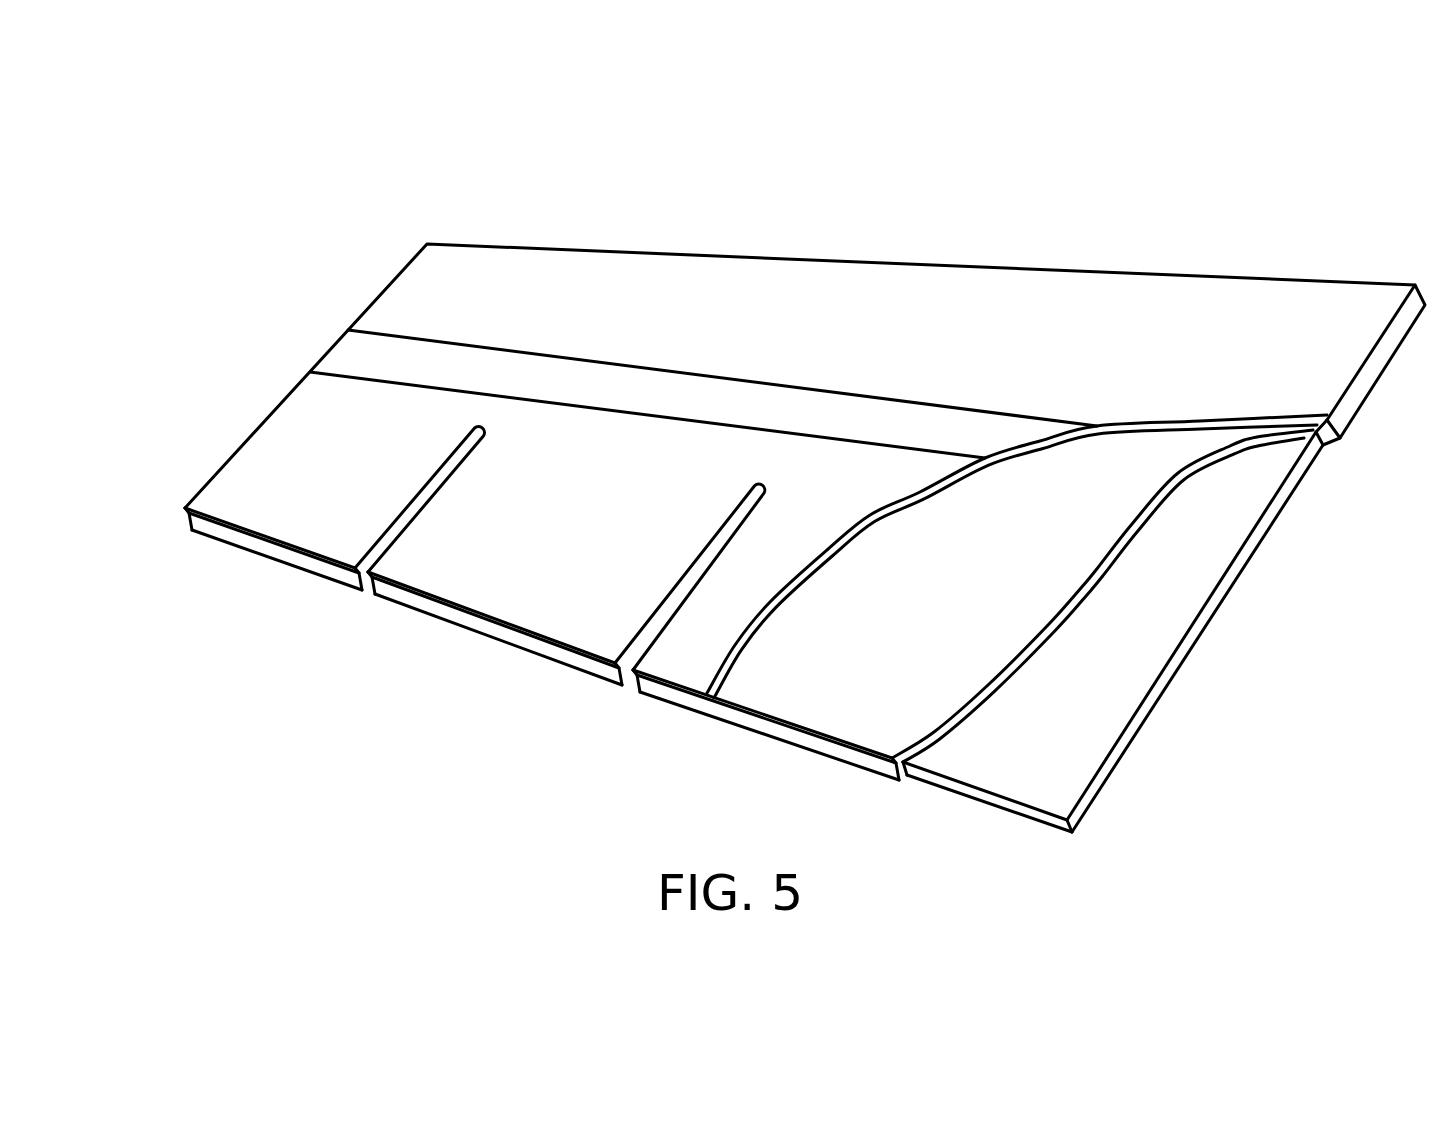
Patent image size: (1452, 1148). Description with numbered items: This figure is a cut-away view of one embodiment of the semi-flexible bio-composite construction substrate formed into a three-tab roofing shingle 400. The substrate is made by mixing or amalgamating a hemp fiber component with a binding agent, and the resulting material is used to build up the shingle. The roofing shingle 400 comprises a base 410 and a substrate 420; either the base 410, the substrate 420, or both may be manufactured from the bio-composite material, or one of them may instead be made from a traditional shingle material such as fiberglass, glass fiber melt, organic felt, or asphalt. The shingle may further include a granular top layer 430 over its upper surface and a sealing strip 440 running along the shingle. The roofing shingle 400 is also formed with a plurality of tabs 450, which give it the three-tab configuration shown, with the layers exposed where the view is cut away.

The roofing shingle 400 is at (1148, 210).
The base 410 is at (1088, 677).
The substrate 420 is at (877, 650).
The granular top layer 430 is at (509, 546).
The sealing strip 440 is at (357, 338).
The tabs 450 is at (273, 457).